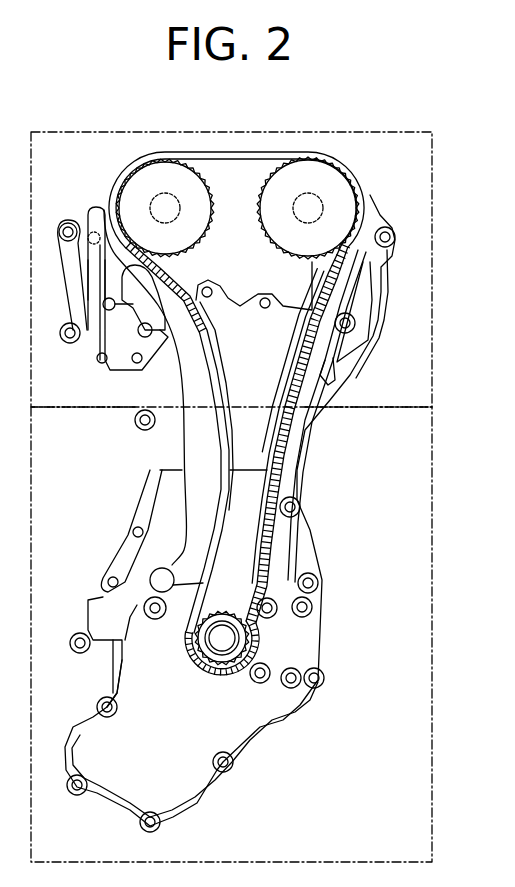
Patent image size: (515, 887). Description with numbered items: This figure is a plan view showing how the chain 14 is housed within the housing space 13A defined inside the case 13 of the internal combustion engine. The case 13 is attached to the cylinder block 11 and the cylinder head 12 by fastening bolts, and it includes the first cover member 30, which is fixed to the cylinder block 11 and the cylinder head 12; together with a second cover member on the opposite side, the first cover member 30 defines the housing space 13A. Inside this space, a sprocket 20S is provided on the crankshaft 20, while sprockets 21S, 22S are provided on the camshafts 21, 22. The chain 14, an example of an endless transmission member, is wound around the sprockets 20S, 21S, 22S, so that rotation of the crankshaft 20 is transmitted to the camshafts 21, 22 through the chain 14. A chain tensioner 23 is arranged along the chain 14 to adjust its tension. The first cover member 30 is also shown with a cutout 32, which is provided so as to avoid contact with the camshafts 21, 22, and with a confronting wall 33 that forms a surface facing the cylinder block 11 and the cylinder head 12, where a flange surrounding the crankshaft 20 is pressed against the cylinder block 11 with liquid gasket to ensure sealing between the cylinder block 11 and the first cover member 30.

The cylinder block 11 is at (432, 497).
The cylinder head 12 is at (432, 257).
The case 13 is at (226, 513).
The housing space 13A is at (193, 733).
The chain 14 is at (256, 560).
The crankshaft 20 is at (222, 655).
The sprocket 20S is at (234, 598).
The camshaft 21 is at (323, 208).
The sprocket 21S is at (262, 215).
The camshaft 22 is at (148, 208).
The sprocket 22S is at (217, 218).
The chain tensioner 23 is at (183, 448).
The first cover member 30 is at (357, 748).
The cutout 32 is at (100, 272).
The confronting wall 33 is at (170, 505).